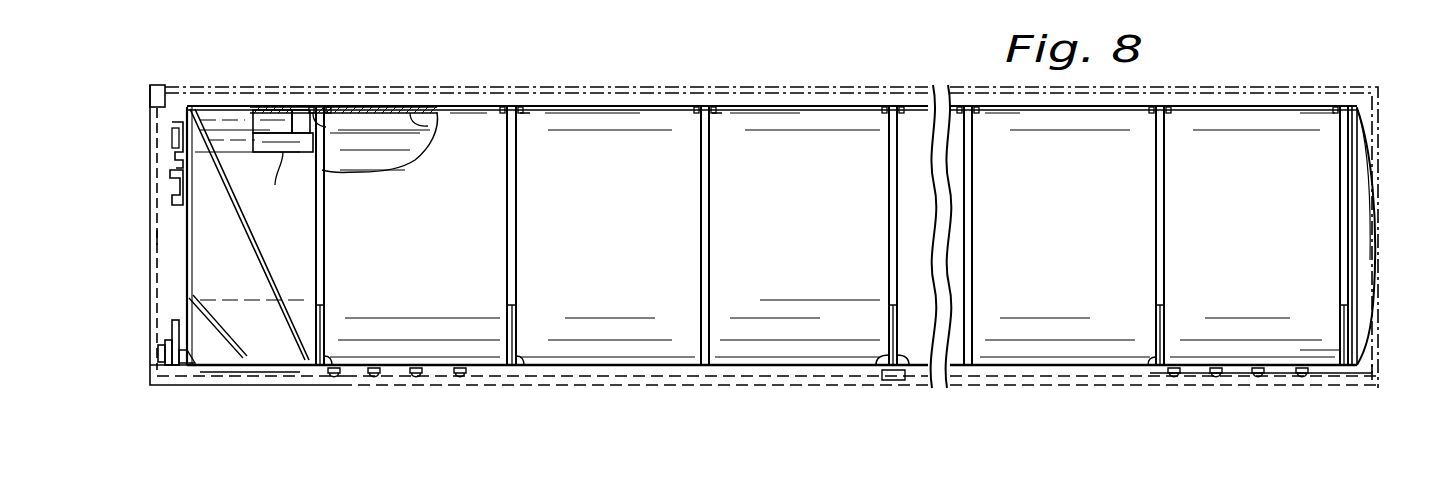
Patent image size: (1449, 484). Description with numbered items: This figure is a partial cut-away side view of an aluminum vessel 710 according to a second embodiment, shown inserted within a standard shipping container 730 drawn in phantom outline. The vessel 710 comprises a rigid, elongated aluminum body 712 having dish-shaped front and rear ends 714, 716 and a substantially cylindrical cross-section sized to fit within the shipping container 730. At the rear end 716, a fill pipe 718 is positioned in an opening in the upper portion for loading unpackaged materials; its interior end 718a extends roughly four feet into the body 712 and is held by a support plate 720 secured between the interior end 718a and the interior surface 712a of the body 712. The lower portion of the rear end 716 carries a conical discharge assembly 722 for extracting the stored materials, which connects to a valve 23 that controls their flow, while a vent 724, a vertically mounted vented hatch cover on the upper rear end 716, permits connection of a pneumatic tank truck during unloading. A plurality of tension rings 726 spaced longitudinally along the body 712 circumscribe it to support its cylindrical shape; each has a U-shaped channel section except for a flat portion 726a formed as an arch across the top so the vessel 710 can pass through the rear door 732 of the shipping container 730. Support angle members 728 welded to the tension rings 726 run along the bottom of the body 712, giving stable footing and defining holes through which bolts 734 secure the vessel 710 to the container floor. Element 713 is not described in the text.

The valve 23 is at (172, 328).
The aluminum vessel 710 is at (632, 271).
The aluminum body 712 is at (848, 106).
The interior surface 712a is at (437, 106).
The lower hinge 713 is at (158, 357).
The front end 714 is at (1362, 141).
The rear end 716 is at (187, 257).
The fill pipe 718 is at (222, 130).
The interior end 718a is at (275, 186).
The support plate 720 is at (310, 106).
The conical discharge assembly 722 is at (218, 375).
The vent 724 is at (170, 196).
The tension rings 726 is at (326, 246).
The flat portion 726a is at (525, 115).
The support angle members 728 is at (350, 374).
The shipping container 730 is at (752, 78).
The rear door 732 is at (157, 236).
The bolts 734 is at (460, 380).